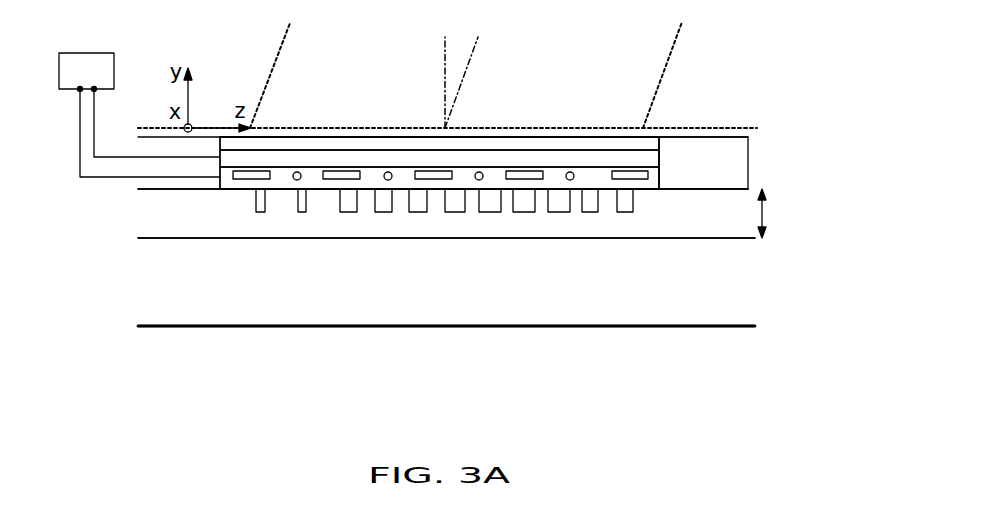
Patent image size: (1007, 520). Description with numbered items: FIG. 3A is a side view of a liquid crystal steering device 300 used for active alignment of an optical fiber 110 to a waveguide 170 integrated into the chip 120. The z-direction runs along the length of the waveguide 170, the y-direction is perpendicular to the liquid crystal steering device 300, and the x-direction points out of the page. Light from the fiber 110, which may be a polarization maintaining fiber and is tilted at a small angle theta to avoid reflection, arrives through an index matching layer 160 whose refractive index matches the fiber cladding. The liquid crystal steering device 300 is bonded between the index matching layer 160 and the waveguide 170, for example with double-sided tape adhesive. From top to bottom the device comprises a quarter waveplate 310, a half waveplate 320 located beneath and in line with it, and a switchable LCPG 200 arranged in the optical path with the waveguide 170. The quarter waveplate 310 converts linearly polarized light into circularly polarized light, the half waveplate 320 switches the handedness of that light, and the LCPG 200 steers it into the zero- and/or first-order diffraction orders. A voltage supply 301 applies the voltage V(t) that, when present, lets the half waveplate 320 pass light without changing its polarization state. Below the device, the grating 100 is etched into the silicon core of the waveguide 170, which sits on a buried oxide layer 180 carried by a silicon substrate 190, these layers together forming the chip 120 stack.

The voltage supply 301 is at (71, 82).
The optical fiber 110 is at (540, 49).
The index matching layer 160 is at (766, 132).
The liquid crystal steering device 300 is at (733, 143).
The quarter waveplate 310 is at (643, 141).
The half waveplate 320 is at (660, 153).
The switchable LCPG 200 is at (660, 183).
The grating 100 is at (318, 222).
The waveguide 170 is at (779, 198).
The buried oxide layer 180 is at (759, 295).
The silicon substrate 190 is at (759, 350).
The chip 120 is at (92, 187).